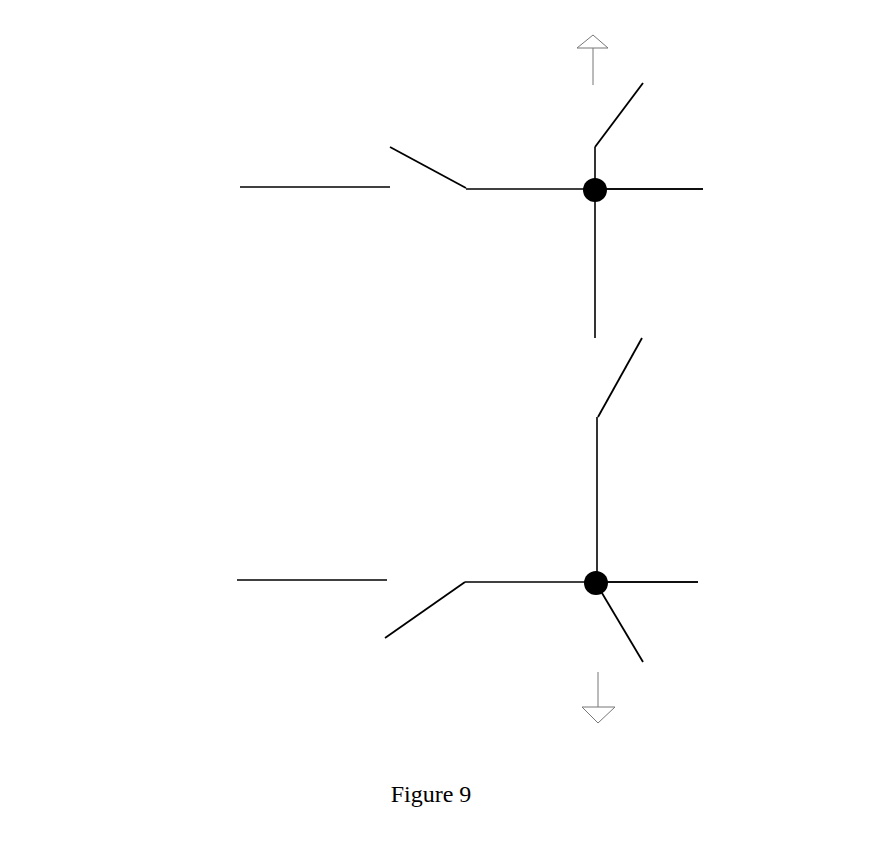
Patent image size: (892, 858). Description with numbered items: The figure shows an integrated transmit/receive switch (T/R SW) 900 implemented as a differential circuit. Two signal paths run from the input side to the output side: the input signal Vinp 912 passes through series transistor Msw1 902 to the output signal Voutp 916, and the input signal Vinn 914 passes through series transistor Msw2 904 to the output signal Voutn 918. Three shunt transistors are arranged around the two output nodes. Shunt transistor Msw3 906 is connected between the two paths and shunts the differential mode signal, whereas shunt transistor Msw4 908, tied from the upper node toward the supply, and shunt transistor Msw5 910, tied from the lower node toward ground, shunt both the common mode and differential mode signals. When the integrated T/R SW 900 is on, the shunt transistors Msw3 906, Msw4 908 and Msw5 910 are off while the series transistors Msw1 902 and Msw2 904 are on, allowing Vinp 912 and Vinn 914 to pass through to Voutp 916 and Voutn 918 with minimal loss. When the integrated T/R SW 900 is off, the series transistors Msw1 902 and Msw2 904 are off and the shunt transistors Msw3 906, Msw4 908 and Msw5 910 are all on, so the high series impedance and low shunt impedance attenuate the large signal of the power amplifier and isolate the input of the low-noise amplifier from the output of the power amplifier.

The integrated transmit/receive switch 900 is at (130, 384).
The series transistor Msw1 902 is at (419, 112).
The series transistor Msw2 904 is at (417, 686).
The shunt transistor Msw3 906 is at (683, 362).
The shunt transistor Msw4 908 is at (683, 91).
The shunt transistor Msw5 910 is at (683, 658).
The input signal Vinp 912 is at (204, 162).
The input signal Vinn 914 is at (202, 552).
The output signal Voutp 916 is at (743, 167).
The output signal Voutn 918 is at (740, 557).